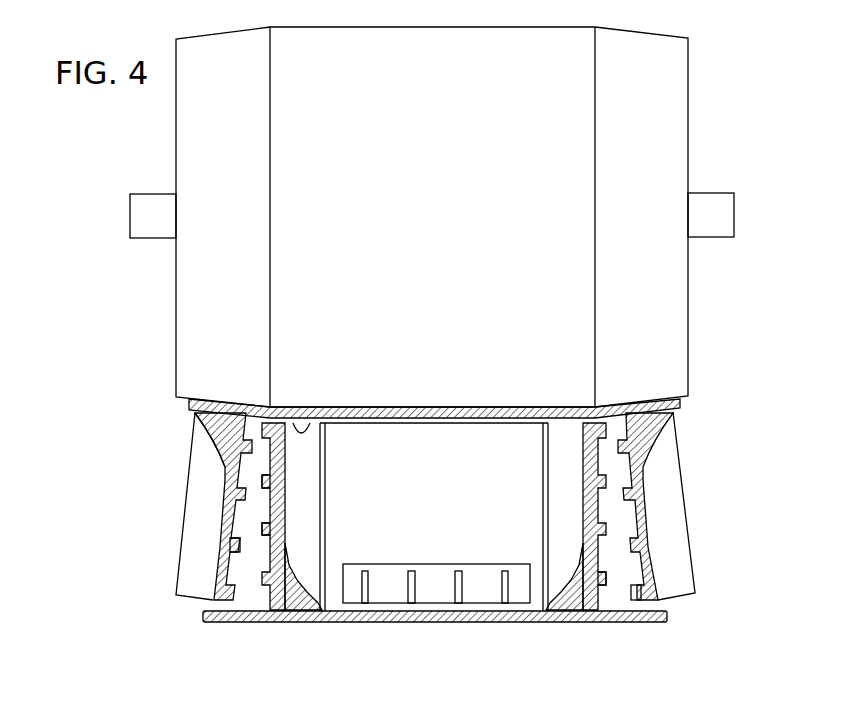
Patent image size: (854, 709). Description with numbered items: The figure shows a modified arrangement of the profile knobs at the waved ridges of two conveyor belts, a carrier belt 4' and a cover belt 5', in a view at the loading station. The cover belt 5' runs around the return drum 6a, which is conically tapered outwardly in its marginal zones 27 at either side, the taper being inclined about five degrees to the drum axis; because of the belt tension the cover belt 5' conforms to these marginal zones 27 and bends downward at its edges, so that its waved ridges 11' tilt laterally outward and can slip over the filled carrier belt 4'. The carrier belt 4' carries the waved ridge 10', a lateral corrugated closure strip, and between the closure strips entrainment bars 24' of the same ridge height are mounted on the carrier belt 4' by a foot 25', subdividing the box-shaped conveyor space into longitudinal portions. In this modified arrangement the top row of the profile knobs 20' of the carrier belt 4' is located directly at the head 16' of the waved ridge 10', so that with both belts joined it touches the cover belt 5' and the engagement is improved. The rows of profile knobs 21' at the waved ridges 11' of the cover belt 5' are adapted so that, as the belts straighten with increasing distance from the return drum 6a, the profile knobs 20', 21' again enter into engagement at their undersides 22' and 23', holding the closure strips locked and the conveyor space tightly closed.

The return drum 6a is at (446, 252).
The marginal zones 27 is at (198, 347).
The cover belt 5' is at (465, 401).
The head of the waved ridge 16' is at (321, 400).
The waved ridges 11' is at (437, 510).
The underside 23' is at (180, 442).
The profile knobs 20' is at (384, 570).
The profile knobs 21' is at (409, 598).
The underside 22' is at (424, 550).
The waved ridge 10' is at (434, 610).
The entrainment bars 24' is at (434, 517).
The foot 25' is at (436, 620).
The carrier belt 4' is at (435, 644).